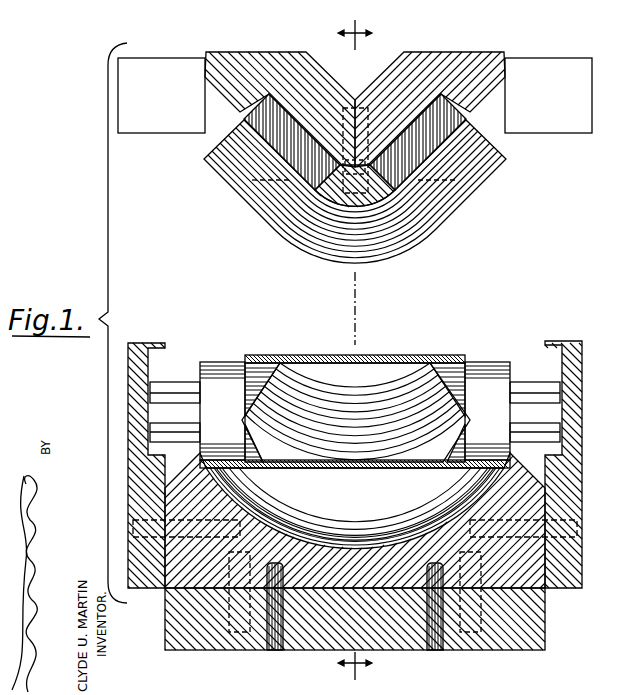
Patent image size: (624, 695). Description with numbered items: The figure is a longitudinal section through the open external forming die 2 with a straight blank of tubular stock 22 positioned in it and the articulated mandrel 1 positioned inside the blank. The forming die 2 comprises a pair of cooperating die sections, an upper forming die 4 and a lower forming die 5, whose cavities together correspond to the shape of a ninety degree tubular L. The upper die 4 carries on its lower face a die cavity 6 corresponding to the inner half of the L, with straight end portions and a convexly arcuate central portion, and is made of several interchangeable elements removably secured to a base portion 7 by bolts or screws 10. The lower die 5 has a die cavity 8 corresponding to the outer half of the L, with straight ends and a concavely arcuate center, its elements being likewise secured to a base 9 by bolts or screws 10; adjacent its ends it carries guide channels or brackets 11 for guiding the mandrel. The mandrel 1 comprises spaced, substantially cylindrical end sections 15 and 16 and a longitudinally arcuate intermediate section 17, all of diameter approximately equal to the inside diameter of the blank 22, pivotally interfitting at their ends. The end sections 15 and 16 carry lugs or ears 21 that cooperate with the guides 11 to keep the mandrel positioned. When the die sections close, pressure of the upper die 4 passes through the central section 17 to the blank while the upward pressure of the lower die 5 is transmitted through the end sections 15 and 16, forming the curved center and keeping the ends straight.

The articulated mandrel 1 is at (213, 362).
The external forming die 2 is at (418, 56).
The upper forming die section 4 is at (296, 262).
The lower forming die section 5 is at (343, 553).
The die cavity 6 is at (408, 226).
The base portion 7 is at (265, 62).
The die cavity 8 is at (327, 543).
The base 9 is at (190, 652).
The bolts or screws 10 is at (236, 652).
The guide channels or brackets 11 is at (144, 348).
The end section of mandrel 15 is at (206, 446).
The end section of mandrel 16 is at (506, 446).
The intermediate or central section of mandrel 17 is at (325, 366).
The lugs or ears 21 is at (181, 386).
The tubular stock blank 22 is at (390, 357).